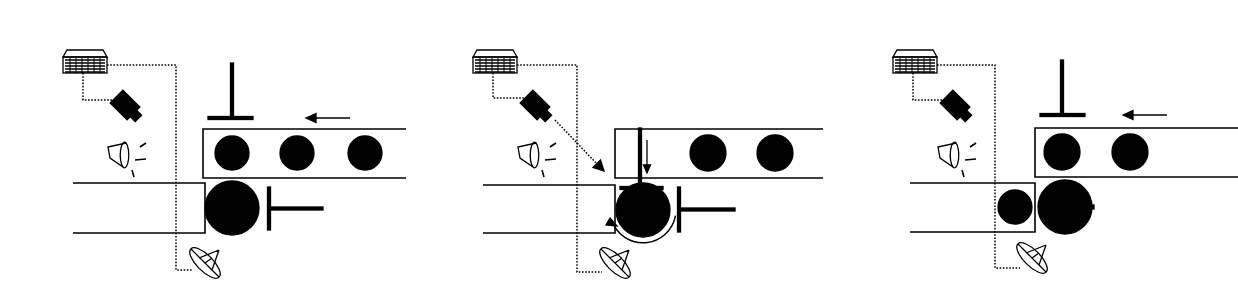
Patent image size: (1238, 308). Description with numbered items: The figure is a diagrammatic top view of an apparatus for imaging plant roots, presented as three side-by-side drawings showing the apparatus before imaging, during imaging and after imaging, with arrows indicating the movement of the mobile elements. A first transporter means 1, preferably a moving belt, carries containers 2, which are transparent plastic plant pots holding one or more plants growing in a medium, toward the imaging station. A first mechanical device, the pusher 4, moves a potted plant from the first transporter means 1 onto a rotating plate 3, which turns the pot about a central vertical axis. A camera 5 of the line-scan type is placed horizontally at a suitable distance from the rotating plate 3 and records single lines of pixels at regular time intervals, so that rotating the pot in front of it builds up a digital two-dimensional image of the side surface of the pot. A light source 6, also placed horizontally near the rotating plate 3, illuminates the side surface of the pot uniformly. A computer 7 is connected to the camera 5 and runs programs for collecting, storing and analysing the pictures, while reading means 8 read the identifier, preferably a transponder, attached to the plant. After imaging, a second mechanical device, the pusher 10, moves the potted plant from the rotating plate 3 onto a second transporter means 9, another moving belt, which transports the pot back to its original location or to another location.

The first transporter means 1 is at (383, 129).
The containers 2 is at (380, 150).
The rotating plate 3 is at (238, 233).
The pusher 4 is at (233, 72).
The camera 5 is at (132, 95).
The light source 6 is at (108, 152).
The computer 7 is at (87, 50).
The reading means 8 is at (203, 278).
The second transporter means 9 is at (150, 233).
The pusher 10 is at (323, 208).